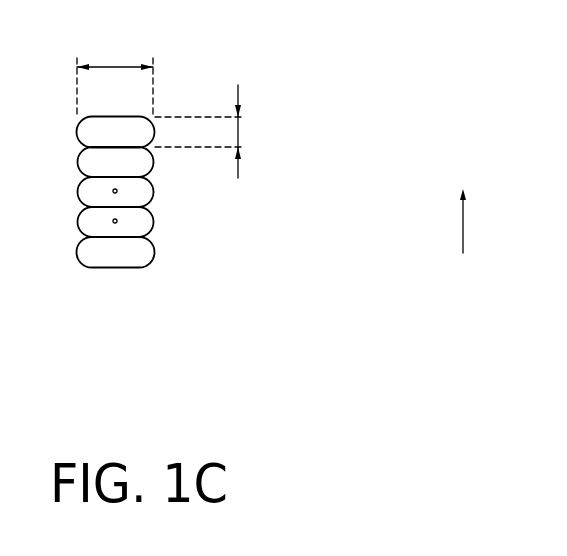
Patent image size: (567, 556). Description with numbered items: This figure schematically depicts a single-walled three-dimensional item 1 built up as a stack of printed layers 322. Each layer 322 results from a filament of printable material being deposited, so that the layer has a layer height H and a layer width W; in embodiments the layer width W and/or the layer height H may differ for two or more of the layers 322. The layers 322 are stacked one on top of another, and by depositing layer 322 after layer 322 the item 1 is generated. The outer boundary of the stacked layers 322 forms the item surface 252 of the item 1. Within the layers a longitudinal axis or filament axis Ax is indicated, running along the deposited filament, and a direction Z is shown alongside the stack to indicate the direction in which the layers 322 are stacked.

The 3D item 1 is at (159, 139).
The item surface 252 is at (169, 192).
The 3D printed layers 322 is at (171, 175).
The layer width W is at (115, 66).
The layer height H is at (240, 133).
The longitudinal axis or filament axis Ax is at (113, 191).
The Z axis direction Z is at (476, 221).